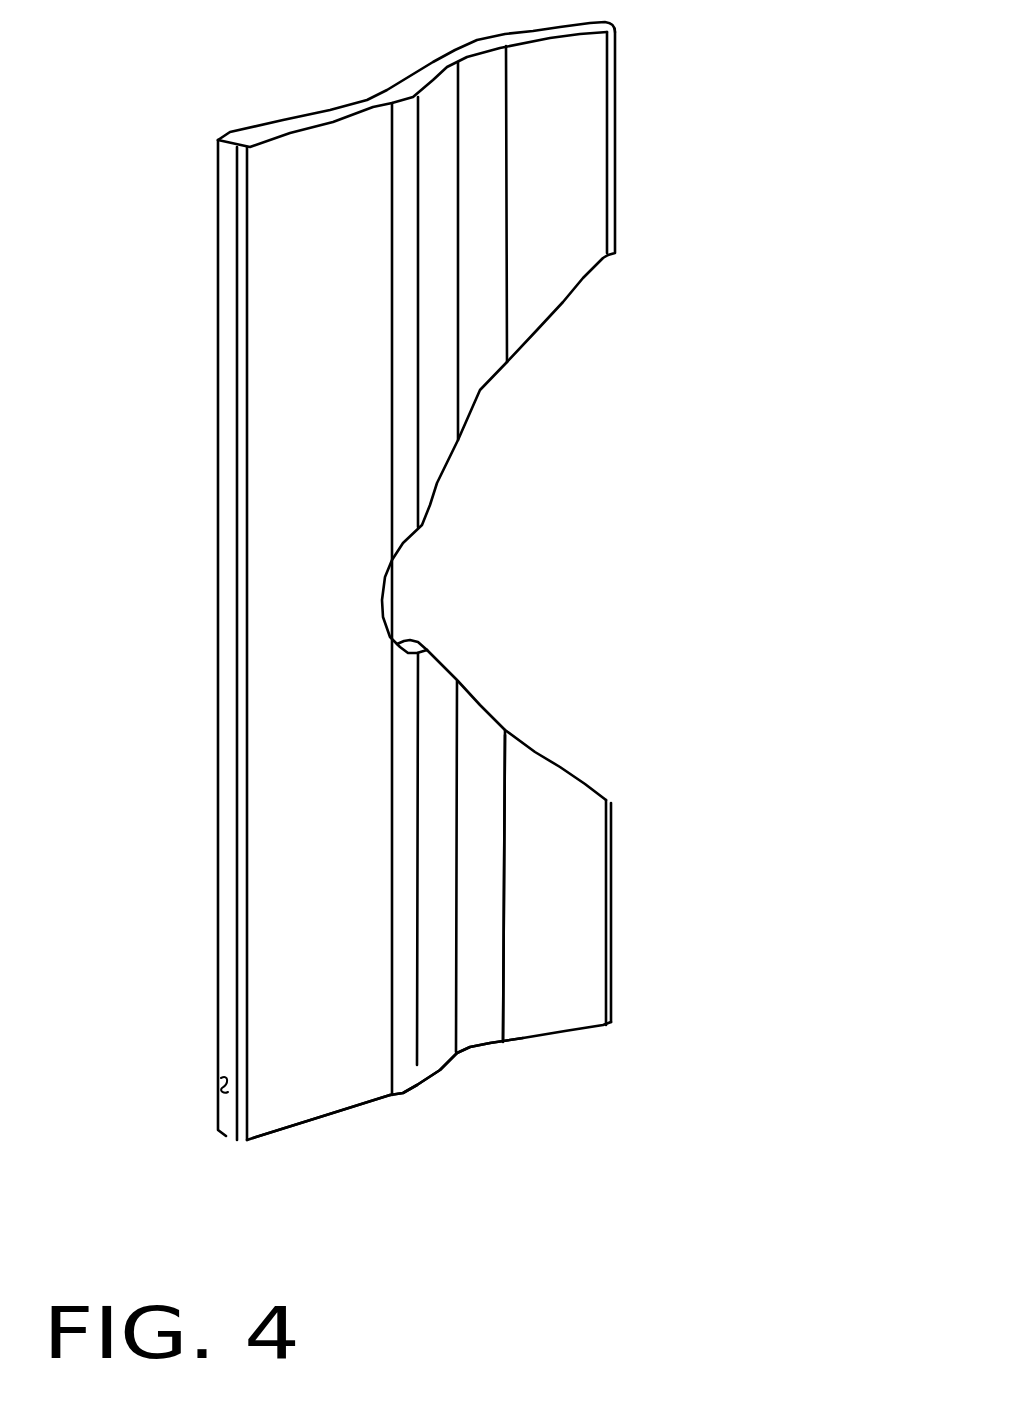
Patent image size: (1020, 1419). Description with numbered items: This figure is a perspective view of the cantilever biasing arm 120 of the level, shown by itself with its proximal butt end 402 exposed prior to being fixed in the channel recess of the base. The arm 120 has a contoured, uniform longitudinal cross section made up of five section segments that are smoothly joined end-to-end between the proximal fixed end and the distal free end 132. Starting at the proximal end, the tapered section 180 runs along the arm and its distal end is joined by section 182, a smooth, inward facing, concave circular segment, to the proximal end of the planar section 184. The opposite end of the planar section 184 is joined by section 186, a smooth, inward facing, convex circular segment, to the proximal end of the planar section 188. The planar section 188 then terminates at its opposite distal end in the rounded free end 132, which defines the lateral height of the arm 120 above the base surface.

The biasing arm 120 is at (492, 607).
The distal free end 132 is at (615, 213).
The tapered section 180 is at (357, 998).
The concave circular segment 182 is at (403, 1092).
The planar section 184 is at (442, 1072).
The convex circular segment 186 is at (487, 1045).
The planar section 188 is at (593, 868).
The proximal butt end 402 is at (217, 1090).